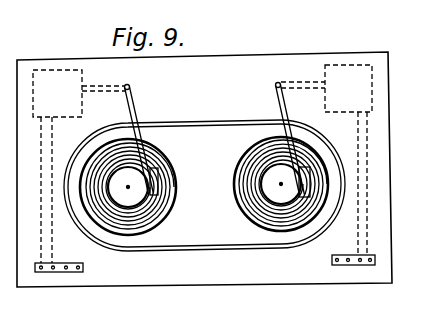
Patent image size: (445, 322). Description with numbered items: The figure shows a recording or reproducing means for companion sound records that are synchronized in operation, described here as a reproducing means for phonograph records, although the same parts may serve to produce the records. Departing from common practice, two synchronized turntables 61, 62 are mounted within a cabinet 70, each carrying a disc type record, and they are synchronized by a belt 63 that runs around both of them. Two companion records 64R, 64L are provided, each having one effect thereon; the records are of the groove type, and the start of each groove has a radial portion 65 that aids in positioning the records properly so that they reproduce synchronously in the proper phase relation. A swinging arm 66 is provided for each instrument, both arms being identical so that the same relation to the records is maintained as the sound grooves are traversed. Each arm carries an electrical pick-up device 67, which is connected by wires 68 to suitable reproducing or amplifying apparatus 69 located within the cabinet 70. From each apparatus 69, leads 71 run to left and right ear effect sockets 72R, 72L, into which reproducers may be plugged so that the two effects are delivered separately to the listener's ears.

The turntable 61 is at (133, 249).
The turntable 62 is at (279, 242).
The belt 63 is at (254, 252).
The companion record 64L is at (111, 221).
The companion record 64R is at (317, 213).
The radial portion of groove 65 is at (82, 182).
The swinging arm 66 is at (132, 118).
The electrical pick-up device 67 is at (311, 168).
The wires 68 is at (311, 82).
The reproducing or amplifying apparatus 69 is at (348, 88).
The cabinet 70 is at (391, 166).
The leads 71 is at (363, 220).
The left ear effect socket 72L is at (62, 273).
The right ear effect socket 72R is at (353, 266).